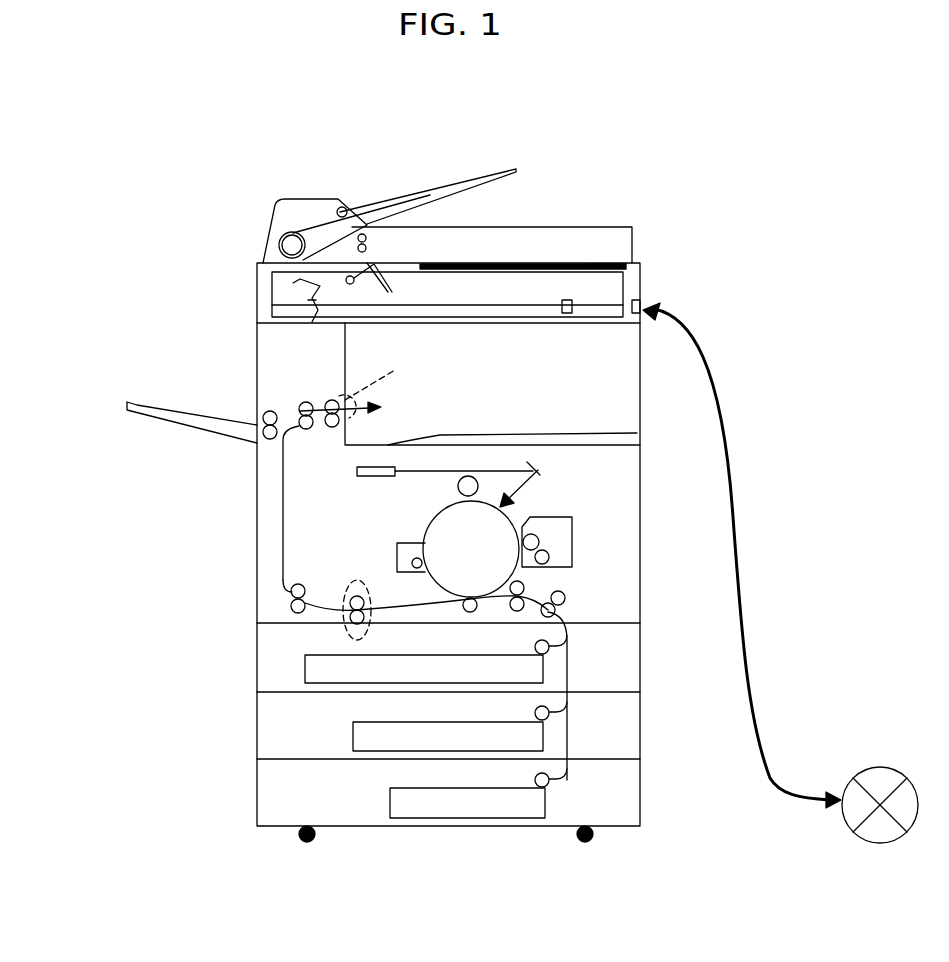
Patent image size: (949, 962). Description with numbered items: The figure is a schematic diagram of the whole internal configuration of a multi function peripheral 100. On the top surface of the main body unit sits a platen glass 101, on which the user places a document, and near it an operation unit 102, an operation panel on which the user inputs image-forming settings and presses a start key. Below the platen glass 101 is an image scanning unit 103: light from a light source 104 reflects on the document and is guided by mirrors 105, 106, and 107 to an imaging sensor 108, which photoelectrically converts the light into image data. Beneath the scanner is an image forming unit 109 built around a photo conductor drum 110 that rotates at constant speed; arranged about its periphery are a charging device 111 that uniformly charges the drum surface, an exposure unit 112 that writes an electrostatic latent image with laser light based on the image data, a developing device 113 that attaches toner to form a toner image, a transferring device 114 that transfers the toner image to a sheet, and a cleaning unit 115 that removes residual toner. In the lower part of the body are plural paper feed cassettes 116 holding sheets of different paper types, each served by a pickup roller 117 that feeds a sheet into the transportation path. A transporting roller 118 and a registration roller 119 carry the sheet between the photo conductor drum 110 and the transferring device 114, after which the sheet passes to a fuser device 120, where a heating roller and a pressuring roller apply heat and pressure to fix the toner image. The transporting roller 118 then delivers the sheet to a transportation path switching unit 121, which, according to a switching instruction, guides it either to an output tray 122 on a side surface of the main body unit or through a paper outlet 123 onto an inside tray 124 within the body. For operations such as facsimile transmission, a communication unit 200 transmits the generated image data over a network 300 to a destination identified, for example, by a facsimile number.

The multi function peripheral 100 is at (450, 164).
The platen glass 101 is at (527, 263).
The operation unit 102 is at (597, 263).
The image scanning unit 103 is at (250, 318).
The light source 104 is at (392, 268).
The mirror 105 is at (388, 288).
The mirror 106 is at (297, 283).
The mirror 107 is at (314, 322).
The imaging sensor 108 is at (572, 300).
The image forming unit 109 is at (247, 608).
The photo conductor drum 110 is at (438, 530).
The charging device 111 is at (457, 486).
The exposure unit 112 is at (357, 471).
The developing device 113 is at (576, 567).
The transferring device 114 is at (462, 607).
The cleaning unit 115 is at (397, 548).
The paper feed cassettes 116 is at (310, 675).
The pickup roller 117 is at (568, 645).
The transporting roller 118 is at (292, 590).
The registration roller 119 is at (514, 610).
The fuser device 120 is at (347, 617).
The transportation path switching unit 121 is at (282, 432).
The output tray 122 is at (132, 403).
The paper outlet 123 is at (370, 381).
The inside tray 124 is at (436, 437).
The communication unit 200 is at (640, 300).
The network 300 is at (853, 778).